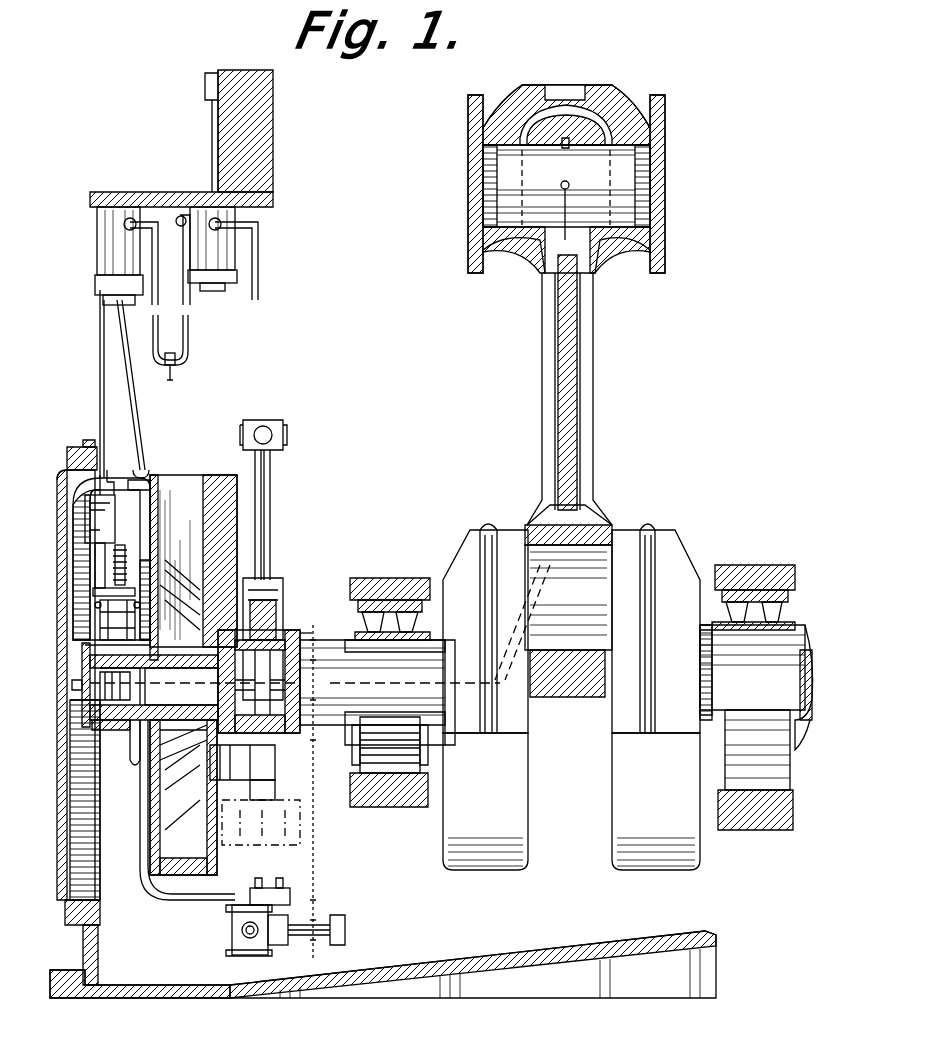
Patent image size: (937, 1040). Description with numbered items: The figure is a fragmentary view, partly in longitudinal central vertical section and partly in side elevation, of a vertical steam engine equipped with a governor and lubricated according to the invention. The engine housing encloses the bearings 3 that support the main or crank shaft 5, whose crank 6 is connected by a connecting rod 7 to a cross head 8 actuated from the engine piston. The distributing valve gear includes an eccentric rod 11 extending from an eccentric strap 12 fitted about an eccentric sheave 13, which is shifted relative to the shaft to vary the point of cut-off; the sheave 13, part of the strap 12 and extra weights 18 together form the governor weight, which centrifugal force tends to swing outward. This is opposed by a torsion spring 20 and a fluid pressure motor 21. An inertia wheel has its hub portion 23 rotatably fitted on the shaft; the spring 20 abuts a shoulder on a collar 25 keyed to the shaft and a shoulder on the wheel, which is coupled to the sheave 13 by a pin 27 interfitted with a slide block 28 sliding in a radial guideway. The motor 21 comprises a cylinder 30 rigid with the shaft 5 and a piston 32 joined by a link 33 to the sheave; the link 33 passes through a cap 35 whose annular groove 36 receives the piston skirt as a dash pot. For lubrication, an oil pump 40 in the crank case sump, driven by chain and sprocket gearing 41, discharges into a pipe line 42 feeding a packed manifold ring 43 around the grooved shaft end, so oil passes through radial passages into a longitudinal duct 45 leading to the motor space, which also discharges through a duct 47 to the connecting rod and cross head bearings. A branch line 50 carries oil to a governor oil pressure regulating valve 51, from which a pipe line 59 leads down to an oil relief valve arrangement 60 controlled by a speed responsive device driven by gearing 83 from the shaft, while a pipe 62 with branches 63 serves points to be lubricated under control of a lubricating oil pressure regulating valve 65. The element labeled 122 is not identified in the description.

The bearings 3 is at (285, 405).
The crank shaft 5 is at (780, 676).
The crank 6 is at (595, 600).
The connecting rod 7 is at (595, 430).
The cross head 8 is at (660, 125).
The eccentric rod 11 is at (272, 540).
The eccentric strap 12 is at (272, 790).
The eccentric sheave 13 is at (275, 770).
The extra weights 18 is at (300, 838).
The torsion spring 20 is at (245, 615).
The fluid pressure motor 21 is at (300, 633).
The hub portion 23 is at (190, 742).
The collar 25 is at (120, 645).
The pin 27 is at (190, 790).
The slide block 28 is at (195, 825).
The cylinder 30 is at (302, 672).
The piston 32 is at (305, 705).
The link 33 is at (268, 645).
The cap 35 is at (305, 635).
The annular groove 36 is at (305, 655).
The oil pump 40 is at (245, 955).
The chain and sprocket gearing 41 is at (318, 880).
The pipe line 42 is at (176, 903).
The manifold ring 43 is at (85, 663).
The longitudinal duct 45 is at (215, 682).
The duct 47 is at (415, 685).
The branch line 50 is at (140, 428).
The governor oil pressure regulating valve 51 is at (97, 250).
The pipe line 59 is at (100, 384).
The oil relief valve arrangement 60 is at (100, 615).
The pipe 62 is at (188, 335).
The branches 63 is at (180, 372).
The lubricating oil pressure regulating valve 65 is at (225, 258).
The gearing 83 is at (90, 722).
The housing block 122 is at (235, 505).